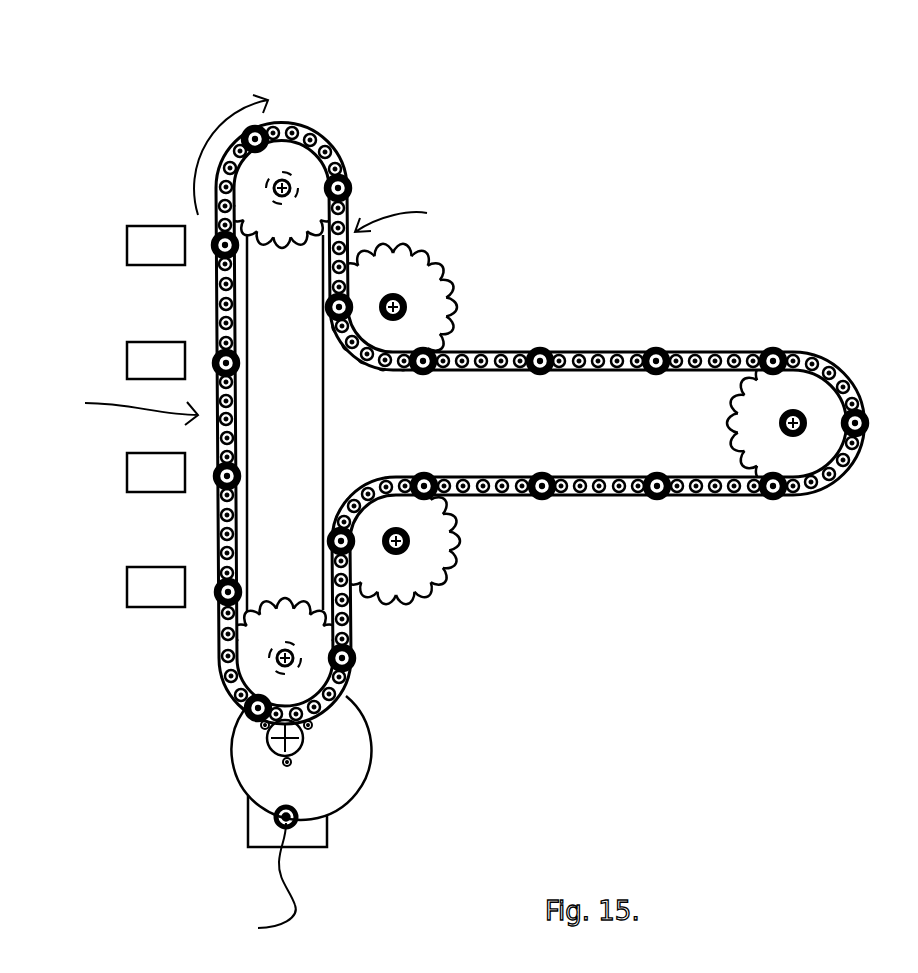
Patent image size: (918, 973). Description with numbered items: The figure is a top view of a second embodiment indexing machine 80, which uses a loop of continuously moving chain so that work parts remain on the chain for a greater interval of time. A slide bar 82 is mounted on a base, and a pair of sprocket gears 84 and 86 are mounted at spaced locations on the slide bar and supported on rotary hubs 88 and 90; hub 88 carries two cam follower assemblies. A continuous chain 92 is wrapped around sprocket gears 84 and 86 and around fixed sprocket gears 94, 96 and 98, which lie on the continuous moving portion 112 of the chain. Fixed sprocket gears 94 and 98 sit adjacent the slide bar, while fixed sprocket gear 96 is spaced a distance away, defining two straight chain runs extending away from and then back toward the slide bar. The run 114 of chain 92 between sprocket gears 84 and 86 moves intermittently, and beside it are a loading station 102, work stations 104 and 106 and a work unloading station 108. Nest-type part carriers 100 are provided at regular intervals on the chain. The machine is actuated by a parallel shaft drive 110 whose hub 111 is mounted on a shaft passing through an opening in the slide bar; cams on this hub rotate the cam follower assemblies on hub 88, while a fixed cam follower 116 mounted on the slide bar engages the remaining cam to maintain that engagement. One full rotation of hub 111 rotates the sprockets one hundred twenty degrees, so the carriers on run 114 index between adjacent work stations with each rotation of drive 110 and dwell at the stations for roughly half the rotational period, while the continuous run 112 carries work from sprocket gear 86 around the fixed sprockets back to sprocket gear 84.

The indexing machine 80 is at (182, 85).
The slide bar 82 is at (290, 460).
The sprocket gear 84 is at (247, 670).
The sprocket gear 86 is at (290, 158).
The rotary hub 88 is at (302, 649).
The rotary hub 90 is at (323, 153).
The continuous chain 92 is at (468, 355).
The fixed sprocket gear 94 is at (412, 282).
The fixed sprocket gear 96 is at (753, 423).
The fixed sprocket gear 98 is at (425, 554).
The nest-type part carriers 100 is at (767, 347).
The loading station 102 is at (127, 467).
The work station 104 is at (127, 357).
The work station 106 is at (127, 242).
The work unloading station 108 is at (127, 577).
The parallel shaft drive 110 is at (399, 740).
The hub 111 is at (270, 748).
The continuous moving portion 112 is at (410, 217).
The intermittent run 114 is at (120, 409).
The fixed cam follower 116 is at (255, 873).